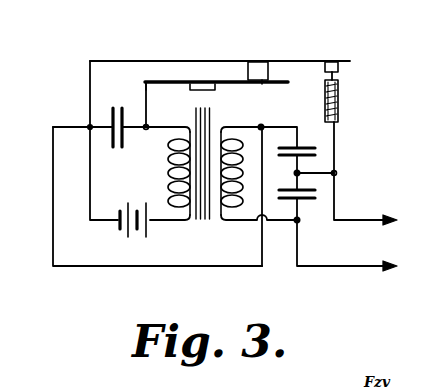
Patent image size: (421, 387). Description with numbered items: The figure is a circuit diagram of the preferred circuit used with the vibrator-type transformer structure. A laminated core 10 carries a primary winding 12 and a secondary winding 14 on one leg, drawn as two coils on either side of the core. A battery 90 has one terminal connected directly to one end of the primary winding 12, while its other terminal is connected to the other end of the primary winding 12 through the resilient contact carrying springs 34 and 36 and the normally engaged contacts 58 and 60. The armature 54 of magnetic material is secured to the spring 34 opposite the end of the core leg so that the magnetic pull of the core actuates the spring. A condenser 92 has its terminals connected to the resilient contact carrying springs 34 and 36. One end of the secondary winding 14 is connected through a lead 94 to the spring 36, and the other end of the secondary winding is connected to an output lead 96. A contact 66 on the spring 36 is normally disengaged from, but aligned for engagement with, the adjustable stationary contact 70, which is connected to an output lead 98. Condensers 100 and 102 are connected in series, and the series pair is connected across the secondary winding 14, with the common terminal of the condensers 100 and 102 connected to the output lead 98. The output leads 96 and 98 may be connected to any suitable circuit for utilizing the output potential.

The laminated core 10 is at (207, 220).
The primary winding 12 is at (167, 172).
The secondary winding 14 is at (240, 148).
The resilient contact carrying spring 34 is at (165, 81).
The resilient contact carrying spring 36 is at (208, 63).
The armature 54 is at (190, 93).
The contact 58 is at (263, 84).
The contact 60 is at (256, 72).
The contact 66 is at (333, 65).
The adjustable stationary contact 70 is at (340, 103).
The battery 90 is at (147, 224).
The condenser 92 is at (112, 109).
The lead 94 is at (236, 267).
The output lead 96 is at (367, 266).
The output lead 98 is at (381, 220).
The condenser 100 is at (312, 143).
The condenser 102 is at (310, 200).